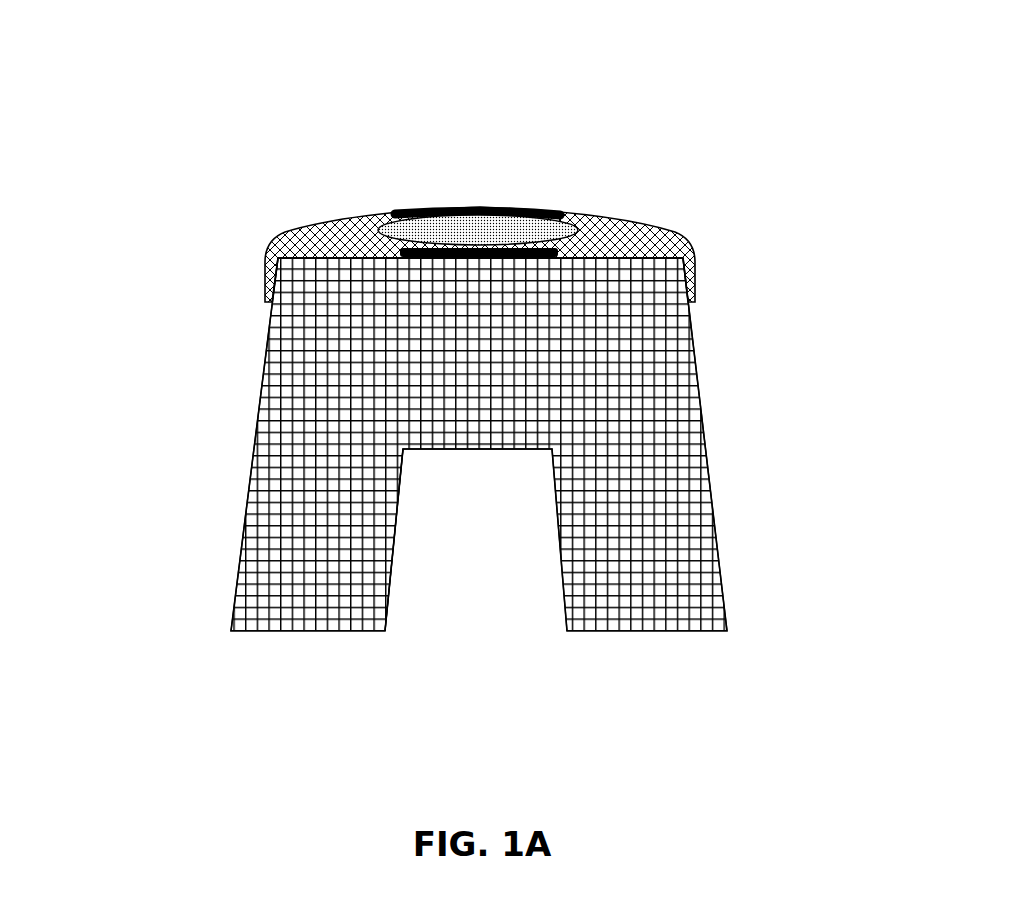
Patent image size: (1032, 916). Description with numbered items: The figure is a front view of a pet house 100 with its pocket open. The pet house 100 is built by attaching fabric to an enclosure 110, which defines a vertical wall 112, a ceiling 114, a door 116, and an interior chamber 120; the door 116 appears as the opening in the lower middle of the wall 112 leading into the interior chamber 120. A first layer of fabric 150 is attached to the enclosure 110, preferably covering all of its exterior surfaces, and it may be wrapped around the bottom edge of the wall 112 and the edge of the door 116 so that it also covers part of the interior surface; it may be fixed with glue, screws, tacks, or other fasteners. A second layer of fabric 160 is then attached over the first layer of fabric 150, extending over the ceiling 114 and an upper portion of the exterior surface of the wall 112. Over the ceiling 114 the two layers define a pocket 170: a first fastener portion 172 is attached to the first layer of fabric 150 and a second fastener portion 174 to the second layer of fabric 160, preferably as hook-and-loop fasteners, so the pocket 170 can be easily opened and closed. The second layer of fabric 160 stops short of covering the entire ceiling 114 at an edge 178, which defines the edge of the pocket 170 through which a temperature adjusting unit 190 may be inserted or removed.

The pet house 100 is at (247, 676).
The enclosure 110 is at (221, 425).
The vertical wall 112 is at (263, 383).
The ceiling 114 is at (340, 223).
The door 116 is at (395, 557).
The interior chamber 120 is at (503, 540).
The first layer of fabric 150 is at (660, 498).
The second layer of fabric 160 is at (623, 223).
The pocket 170 is at (300, 230).
The first fastener portion 172 is at (450, 243).
The second fastener portion 174 is at (480, 203).
The edge 178 is at (355, 175).
The temperature adjusting unit 190 is at (515, 230).